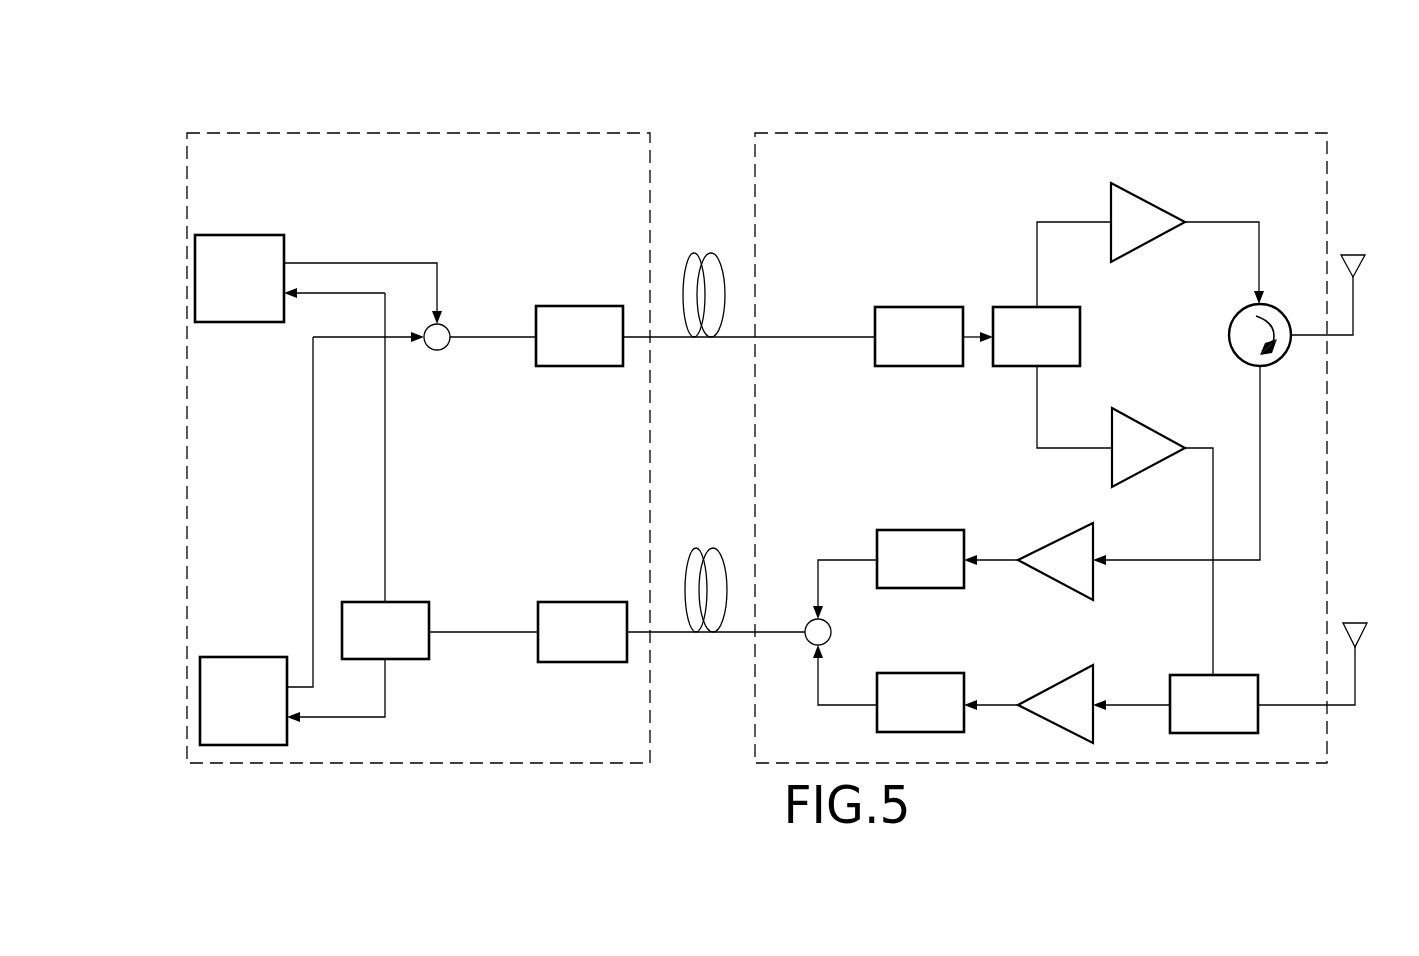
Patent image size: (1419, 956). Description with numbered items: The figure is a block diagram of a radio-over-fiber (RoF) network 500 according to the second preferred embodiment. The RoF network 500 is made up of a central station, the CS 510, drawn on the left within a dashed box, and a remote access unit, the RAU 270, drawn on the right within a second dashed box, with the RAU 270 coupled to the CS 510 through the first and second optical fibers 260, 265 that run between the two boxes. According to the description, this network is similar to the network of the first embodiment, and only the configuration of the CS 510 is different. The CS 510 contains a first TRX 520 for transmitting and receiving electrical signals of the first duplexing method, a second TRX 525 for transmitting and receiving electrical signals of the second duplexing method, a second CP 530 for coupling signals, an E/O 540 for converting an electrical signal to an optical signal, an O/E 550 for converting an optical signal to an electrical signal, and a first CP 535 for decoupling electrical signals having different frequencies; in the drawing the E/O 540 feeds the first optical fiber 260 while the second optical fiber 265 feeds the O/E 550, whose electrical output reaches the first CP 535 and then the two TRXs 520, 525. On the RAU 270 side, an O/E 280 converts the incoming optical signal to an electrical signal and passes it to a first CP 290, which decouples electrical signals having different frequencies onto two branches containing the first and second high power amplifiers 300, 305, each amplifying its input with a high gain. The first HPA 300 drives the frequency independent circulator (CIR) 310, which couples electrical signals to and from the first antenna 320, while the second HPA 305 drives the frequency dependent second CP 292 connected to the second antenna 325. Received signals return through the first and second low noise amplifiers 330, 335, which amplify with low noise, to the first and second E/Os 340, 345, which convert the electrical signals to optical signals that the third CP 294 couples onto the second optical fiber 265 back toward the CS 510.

The RoF network 500 is at (778, 38).
The CS 510 is at (432, 133).
The RAU 270 is at (1037, 133).
The first TRX 520 is at (240, 235).
The second TRX 525 is at (243, 657).
The second CP 530 is at (437, 350).
The first CP 535 is at (355, 602).
The E/O 540 is at (580, 306).
The O/E 550 is at (582, 602).
The first optical fiber 260 is at (707, 253).
The second optical fiber 265 is at (711, 548).
The O/E 280 is at (919, 307).
The first CP 290 is at (1081, 335).
The first high power amplifier 300 is at (1147, 197).
The second high power amplifier 305 is at (1149, 421).
The circulator 310 is at (1228, 335).
The first antenna 320 is at (1364, 258).
The second antenna 325 is at (1366, 628).
The first low noise amplifier 330 is at (1055, 531).
The second low noise amplifier 335 is at (1056, 679).
The first E/O 340 is at (920, 530).
The second E/O 345 is at (922, 673).
The second CP 292 is at (1186, 675).
The third CP 294 is at (832, 632).